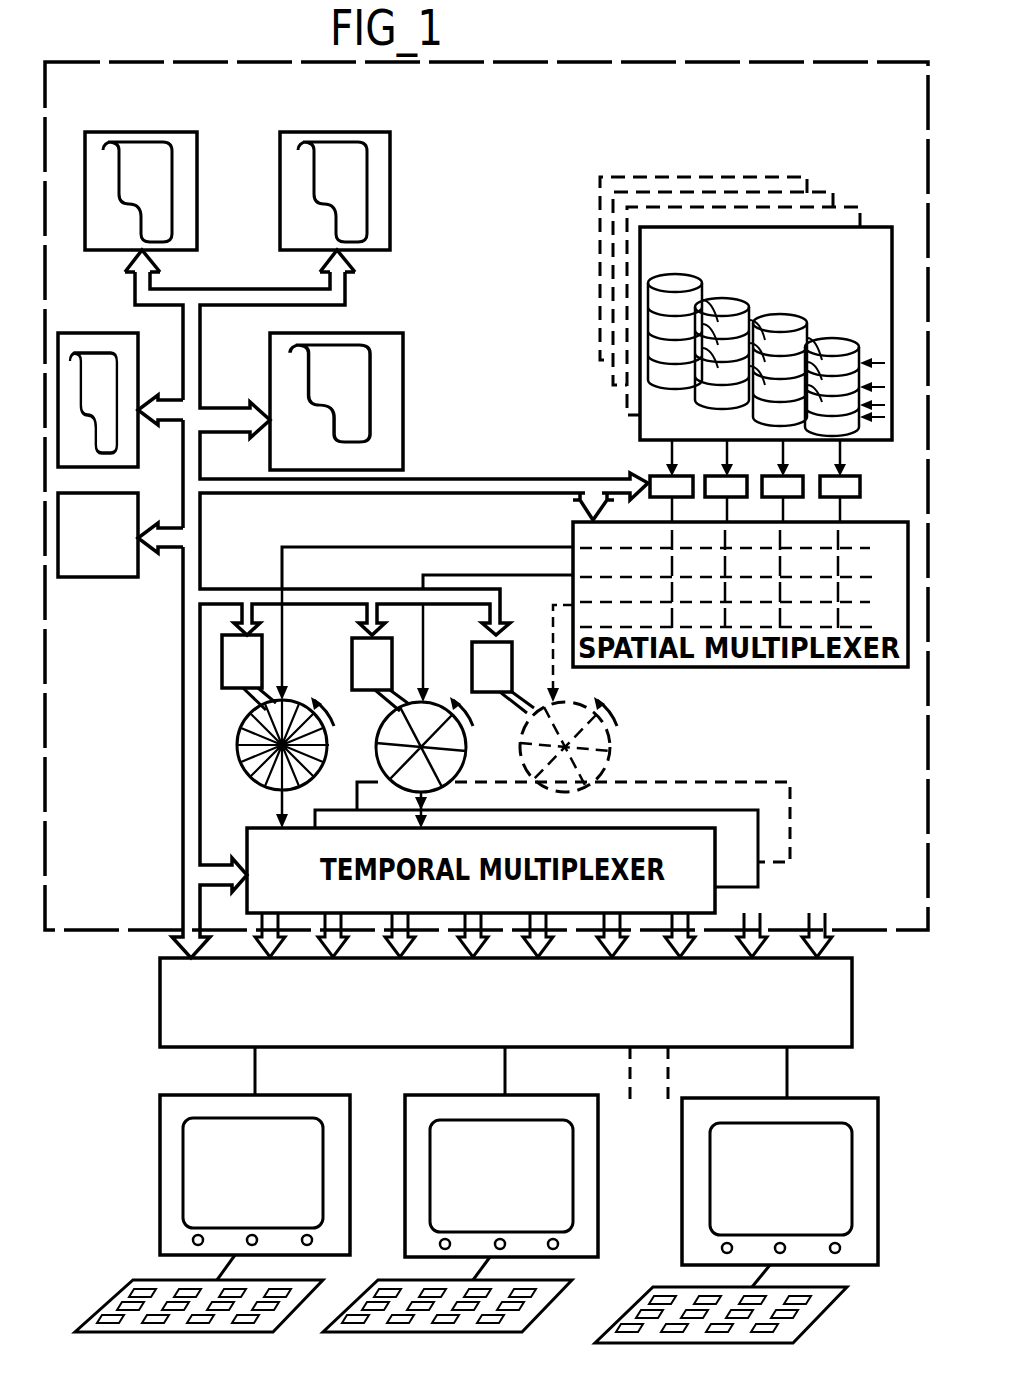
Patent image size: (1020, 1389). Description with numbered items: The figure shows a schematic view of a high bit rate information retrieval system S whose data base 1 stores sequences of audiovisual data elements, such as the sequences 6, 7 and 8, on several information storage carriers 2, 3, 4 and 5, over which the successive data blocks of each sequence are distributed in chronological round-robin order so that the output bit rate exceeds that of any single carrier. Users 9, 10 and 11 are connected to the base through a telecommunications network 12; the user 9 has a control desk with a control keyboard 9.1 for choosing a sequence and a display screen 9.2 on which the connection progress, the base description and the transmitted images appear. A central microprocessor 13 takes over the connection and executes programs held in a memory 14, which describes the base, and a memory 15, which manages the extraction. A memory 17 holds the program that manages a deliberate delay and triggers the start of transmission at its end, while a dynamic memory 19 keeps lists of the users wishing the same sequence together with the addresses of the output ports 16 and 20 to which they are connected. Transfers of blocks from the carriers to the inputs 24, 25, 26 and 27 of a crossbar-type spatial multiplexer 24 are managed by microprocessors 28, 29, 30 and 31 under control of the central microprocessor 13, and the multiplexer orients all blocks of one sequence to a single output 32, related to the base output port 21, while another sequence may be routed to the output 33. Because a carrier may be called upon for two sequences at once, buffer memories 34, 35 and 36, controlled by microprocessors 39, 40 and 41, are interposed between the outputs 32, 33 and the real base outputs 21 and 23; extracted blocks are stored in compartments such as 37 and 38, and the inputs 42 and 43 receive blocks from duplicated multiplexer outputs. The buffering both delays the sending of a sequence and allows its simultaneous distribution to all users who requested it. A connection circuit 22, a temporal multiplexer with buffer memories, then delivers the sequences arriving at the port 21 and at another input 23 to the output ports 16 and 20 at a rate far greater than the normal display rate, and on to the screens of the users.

The data base 1 is at (878, 228).
The information storage carrier 2 is at (683, 279).
The information storage carrier 3 is at (728, 305).
The information storage carrier 4 is at (785, 320).
The information storage carrier 5 is at (838, 345).
The sequence 6 is at (880, 362).
The sequence 7 is at (882, 387).
The sequence 8 is at (872, 418).
The user 9 is at (235, 1207).
The control keyboard 9.1 is at (280, 1320).
The display screen 9.2 is at (350, 1170).
The user 10 is at (419, 1066).
The user 11 is at (702, 1072).
The telecommunications network 12 is at (852, 1003).
The central microprocessor 13 is at (128, 577).
The memory 14 is at (198, 168).
The memory 15 is at (391, 168).
The output port 16 is at (342, 918).
The memory 17 is at (270, 352).
The dynamic memory 19 is at (138, 343).
The output port 20 is at (409, 918).
The output port 21 is at (274, 812).
The connection circuit 22 is at (717, 867).
The input 23 is at (428, 802).
The spatial multiplexer 24 is at (678, 512).
The input 25 is at (732, 512).
The input 26 is at (787, 512).
The input 27 is at (845, 512).
The microprocessor 28 is at (692, 458).
The microprocessor 29 is at (744, 458).
The microprocessor 30 is at (802, 458).
The microprocessor 31 is at (858, 458).
The output 32 is at (563, 545).
The output 33 is at (565, 575).
The buffer memory 34 is at (243, 755).
The buffer memory 35 is at (484, 742).
The buffer memory 36 is at (602, 725).
The memory compartment 37 is at (288, 708).
The memory compartment 38 is at (301, 713).
The microprocessor 39 is at (226, 690).
The microprocessor 40 is at (394, 660).
The microprocessor 41 is at (512, 657).
The input 42 is at (328, 727).
The input 43 is at (328, 756).
The information retrieval system S is at (55, 935).